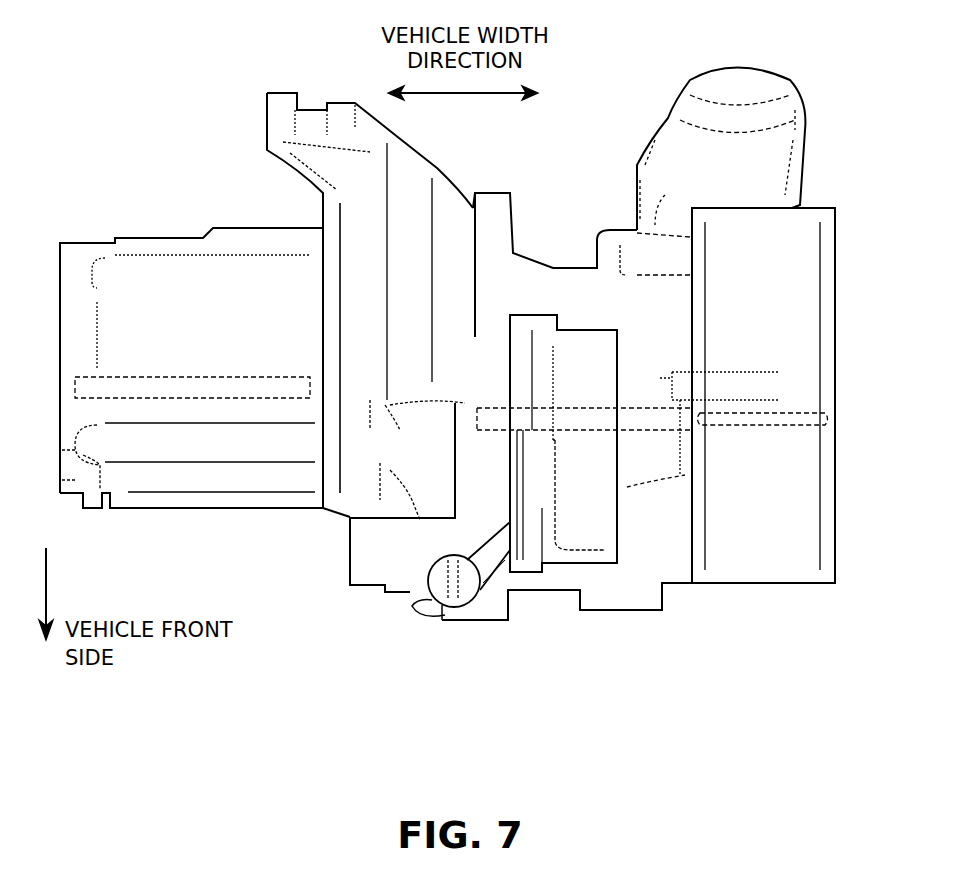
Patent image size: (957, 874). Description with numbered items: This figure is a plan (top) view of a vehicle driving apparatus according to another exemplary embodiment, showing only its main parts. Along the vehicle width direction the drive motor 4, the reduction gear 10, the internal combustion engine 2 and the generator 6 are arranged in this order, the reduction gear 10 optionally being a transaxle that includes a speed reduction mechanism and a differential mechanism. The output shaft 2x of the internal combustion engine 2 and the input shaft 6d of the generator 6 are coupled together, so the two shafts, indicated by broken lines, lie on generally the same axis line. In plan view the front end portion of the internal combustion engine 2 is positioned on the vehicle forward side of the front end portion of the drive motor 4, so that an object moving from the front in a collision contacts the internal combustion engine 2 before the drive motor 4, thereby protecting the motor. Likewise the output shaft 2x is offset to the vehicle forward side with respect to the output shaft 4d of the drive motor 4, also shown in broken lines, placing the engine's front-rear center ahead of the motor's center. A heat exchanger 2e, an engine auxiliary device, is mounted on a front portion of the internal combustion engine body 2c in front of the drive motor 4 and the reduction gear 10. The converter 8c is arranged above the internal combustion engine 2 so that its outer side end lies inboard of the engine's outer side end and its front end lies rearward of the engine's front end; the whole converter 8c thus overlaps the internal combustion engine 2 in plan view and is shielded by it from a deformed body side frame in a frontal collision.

The internal combustion engine 2 is at (513, 655).
The internal combustion engine body 2c is at (587, 612).
The heat exchanger 2e is at (415, 570).
The output shaft 2x is at (643, 430).
The drive motor 4 is at (222, 510).
The output shaft 4d is at (162, 398).
The generator 6 is at (773, 583).
The input shaft 6d is at (780, 430).
The converter 8c is at (617, 545).
The reduction gear 10 is at (345, 520).